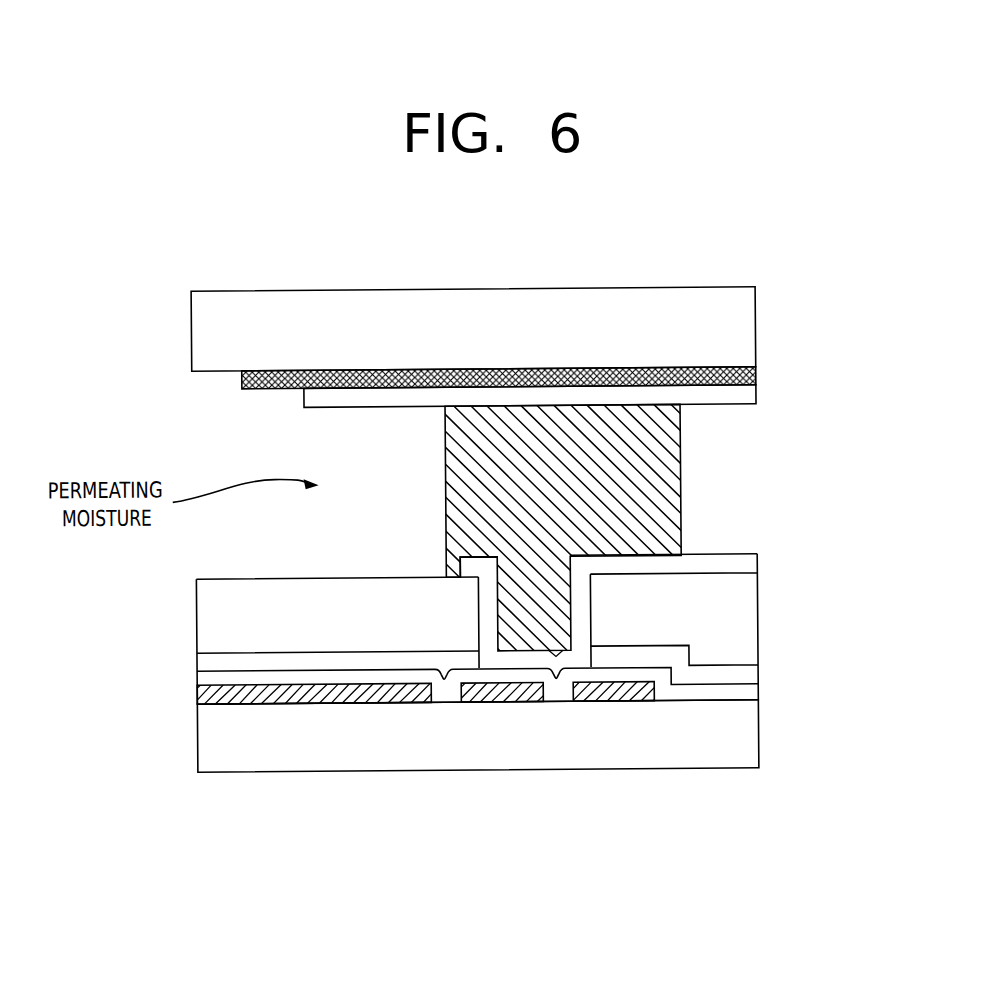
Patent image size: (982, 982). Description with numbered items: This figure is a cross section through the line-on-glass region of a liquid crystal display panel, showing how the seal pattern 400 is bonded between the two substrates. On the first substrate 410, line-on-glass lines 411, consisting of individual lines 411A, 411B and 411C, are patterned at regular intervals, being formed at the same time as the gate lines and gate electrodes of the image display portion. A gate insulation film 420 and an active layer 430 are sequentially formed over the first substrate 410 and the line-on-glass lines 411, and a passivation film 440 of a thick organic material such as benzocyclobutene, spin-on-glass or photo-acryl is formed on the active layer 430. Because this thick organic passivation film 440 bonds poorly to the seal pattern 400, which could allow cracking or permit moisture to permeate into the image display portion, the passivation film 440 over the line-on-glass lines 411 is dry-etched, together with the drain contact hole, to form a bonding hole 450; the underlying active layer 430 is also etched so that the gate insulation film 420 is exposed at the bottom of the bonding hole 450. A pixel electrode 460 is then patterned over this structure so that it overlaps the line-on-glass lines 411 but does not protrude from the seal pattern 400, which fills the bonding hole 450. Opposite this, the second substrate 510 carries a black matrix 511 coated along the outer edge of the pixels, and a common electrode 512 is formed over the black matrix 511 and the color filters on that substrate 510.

The second substrate 510 is at (747, 313).
The black matrix 511 is at (757, 370).
The common electrode 512 is at (748, 395).
The seal pattern 400 is at (668, 473).
The pixel electrode 460 is at (748, 567).
The bonding hole 450 is at (508, 609).
The passivation film 440 is at (748, 608).
The active layer 430 is at (750, 674).
The gate insulation film 420 is at (750, 697).
The first substrate 410 is at (750, 748).
The line-on-glass lines 411 is at (600, 838).
The line-on-glass line 411A is at (390, 702).
The line-on-glass line 411B is at (500, 702).
The line-on-glass line 411C is at (600, 702).